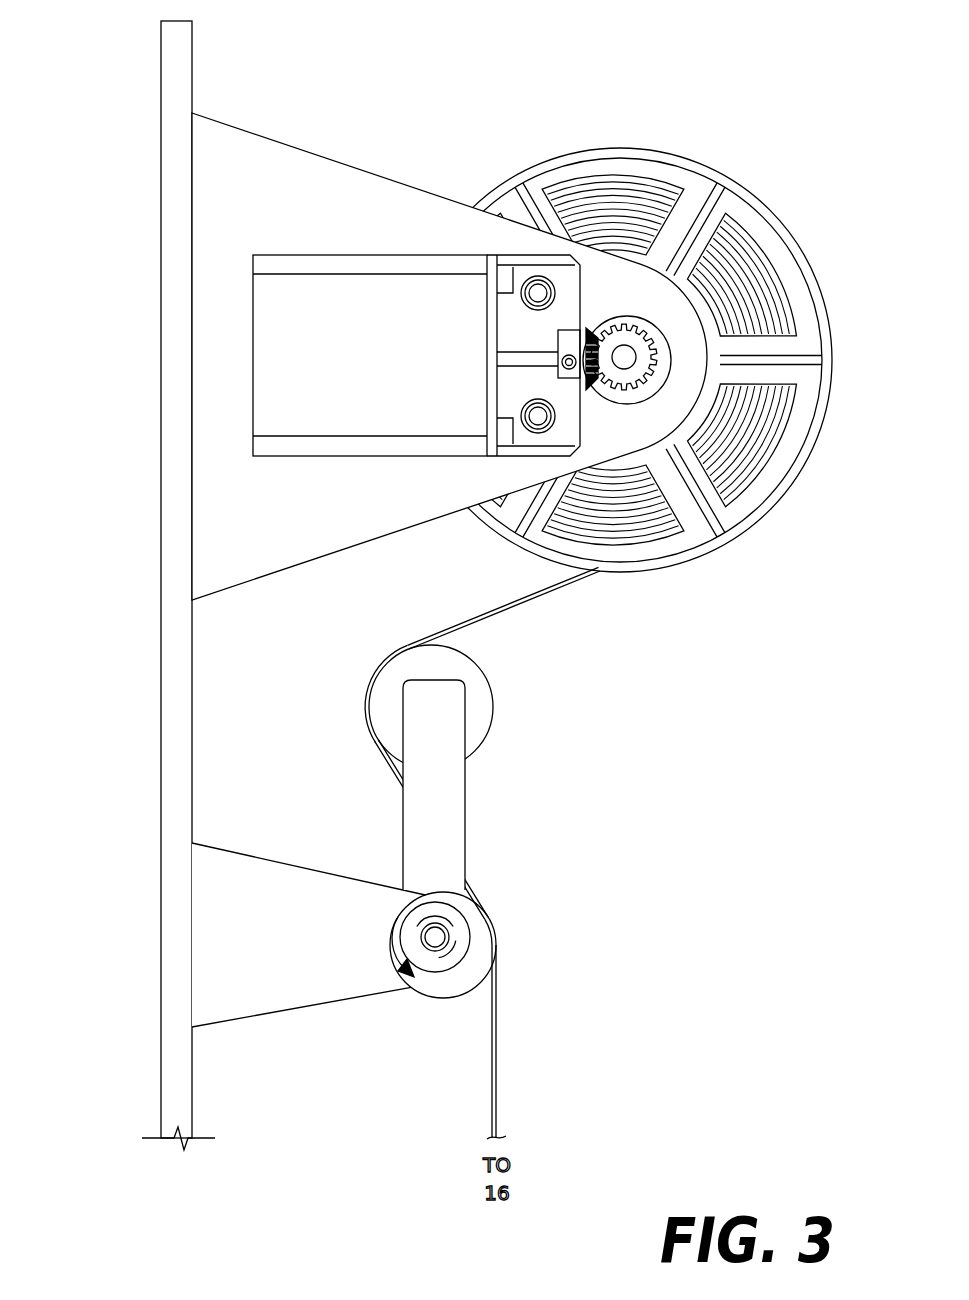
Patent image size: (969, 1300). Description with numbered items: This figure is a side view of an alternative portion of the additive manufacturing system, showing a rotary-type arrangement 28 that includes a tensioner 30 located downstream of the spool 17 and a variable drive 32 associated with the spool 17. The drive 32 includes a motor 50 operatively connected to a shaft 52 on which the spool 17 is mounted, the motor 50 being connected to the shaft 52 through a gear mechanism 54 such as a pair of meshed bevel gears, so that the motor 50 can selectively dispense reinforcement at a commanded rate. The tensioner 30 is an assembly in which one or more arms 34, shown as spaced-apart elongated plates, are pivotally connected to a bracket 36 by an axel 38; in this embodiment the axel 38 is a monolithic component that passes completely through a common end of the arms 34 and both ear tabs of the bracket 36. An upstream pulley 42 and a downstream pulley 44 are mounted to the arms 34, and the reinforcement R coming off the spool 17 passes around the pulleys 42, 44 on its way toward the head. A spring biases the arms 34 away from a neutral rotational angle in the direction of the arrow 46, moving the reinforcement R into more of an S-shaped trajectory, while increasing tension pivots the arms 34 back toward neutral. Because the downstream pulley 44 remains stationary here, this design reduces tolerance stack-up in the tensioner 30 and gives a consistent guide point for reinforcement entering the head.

The spool 17 is at (830, 352).
The arrangement 28 is at (549, 570).
The tensioner 30 is at (95, 947).
The variable drive 32 is at (205, 357).
The arms 34 is at (425, 817).
The bracket 36 is at (243, 531).
The axel 38 is at (442, 935).
The upstream pulley 42 is at (421, 674).
The downstream pulley 44 is at (493, 938).
The arrow 46 is at (395, 945).
The motor 50 is at (362, 364).
The shaft 52 is at (628, 338).
The gear mechanism 54 is at (607, 325).
The rope R is at (530, 600).